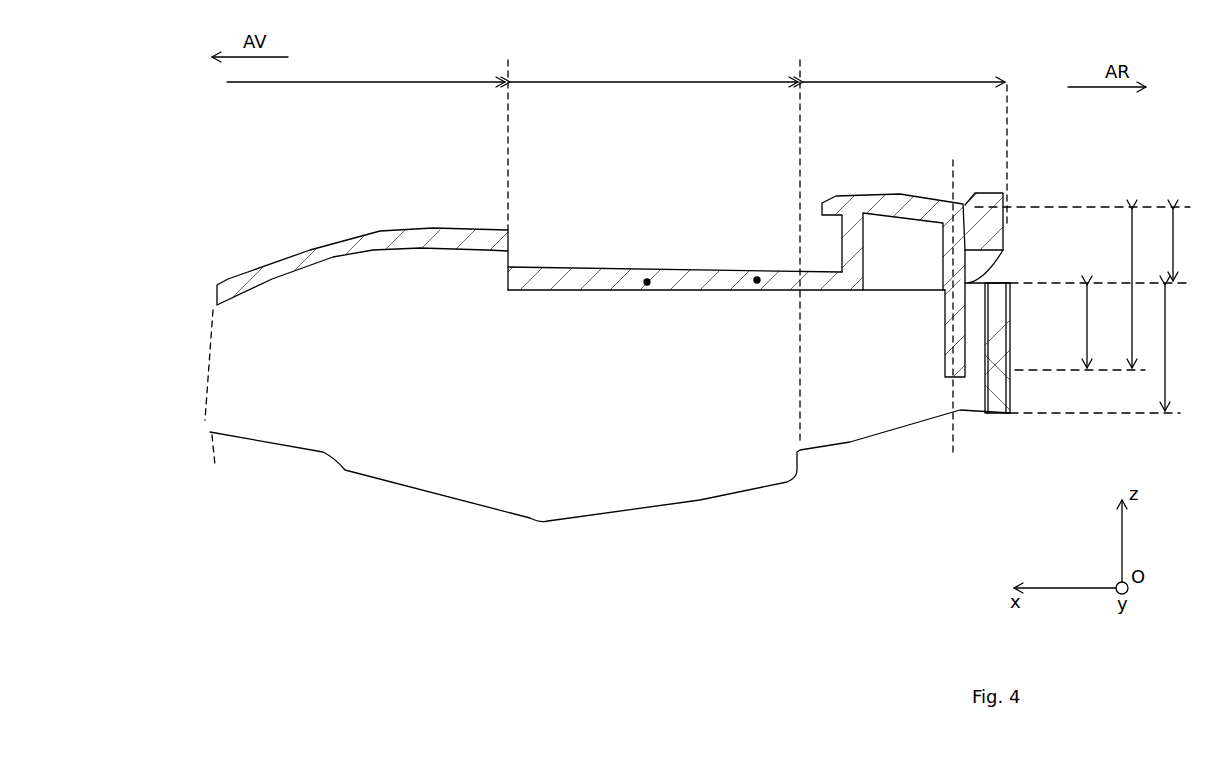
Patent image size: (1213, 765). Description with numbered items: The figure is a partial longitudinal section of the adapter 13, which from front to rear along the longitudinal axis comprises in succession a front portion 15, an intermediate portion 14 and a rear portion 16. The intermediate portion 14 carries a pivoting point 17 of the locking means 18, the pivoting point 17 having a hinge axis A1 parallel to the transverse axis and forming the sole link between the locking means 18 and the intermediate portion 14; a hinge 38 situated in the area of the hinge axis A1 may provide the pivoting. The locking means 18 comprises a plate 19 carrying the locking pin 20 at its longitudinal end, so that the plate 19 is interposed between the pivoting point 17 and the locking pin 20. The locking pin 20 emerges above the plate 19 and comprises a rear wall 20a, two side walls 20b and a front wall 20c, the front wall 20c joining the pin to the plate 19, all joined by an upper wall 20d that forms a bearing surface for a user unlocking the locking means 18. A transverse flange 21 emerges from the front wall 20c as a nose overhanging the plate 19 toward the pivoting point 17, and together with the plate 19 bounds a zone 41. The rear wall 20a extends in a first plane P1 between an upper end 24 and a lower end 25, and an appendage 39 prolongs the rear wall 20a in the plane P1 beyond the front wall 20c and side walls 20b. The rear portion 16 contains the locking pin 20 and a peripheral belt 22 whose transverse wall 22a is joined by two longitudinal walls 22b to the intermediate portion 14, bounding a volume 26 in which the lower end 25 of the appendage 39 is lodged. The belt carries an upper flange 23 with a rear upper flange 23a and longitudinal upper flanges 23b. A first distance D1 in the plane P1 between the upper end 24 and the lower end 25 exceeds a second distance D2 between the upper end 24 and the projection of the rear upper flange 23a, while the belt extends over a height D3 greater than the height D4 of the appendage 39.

The adapter 13 is at (440, 182).
The intermediate portion 14 is at (654, 67).
The front portion 15 is at (366, 66).
The rear portion 16 is at (904, 68).
The pivoting point 17 is at (665, 262).
The locking means 18 is at (747, 305).
The plate 19 is at (757, 277).
The locking pin 20 is at (923, 173).
The rear wall 20a is at (1004, 228).
The side walls 20b is at (899, 248).
The front wall 20c is at (840, 240).
The upper wall 20d is at (900, 193).
The transverse flange 21 is at (830, 200).
The peripheral belt 22 is at (1018, 370).
The transverse wall 22a is at (1010, 352).
The longitudinal walls 22b is at (899, 350).
The upper flange 23 is at (976, 268).
The rear upper flange 23a is at (1000, 277).
The longitudinal upper flanges 23b is at (1004, 266).
The upper end 24 is at (1005, 186).
The lower end 25 is at (955, 377).
The volume 26 is at (975, 400).
The hinge 38 is at (647, 286).
The appendage 39 is at (1005, 397).
The zone 41 is at (827, 250).
The hinge axis A1 is at (647, 279).
The first plane P1 is at (966, 305).
The first distance D1 is at (1146, 288).
The second distance D2 is at (1188, 245).
The height of the portion D3 is at (1183, 348).
The height of the appendage D4 is at (1102, 326).